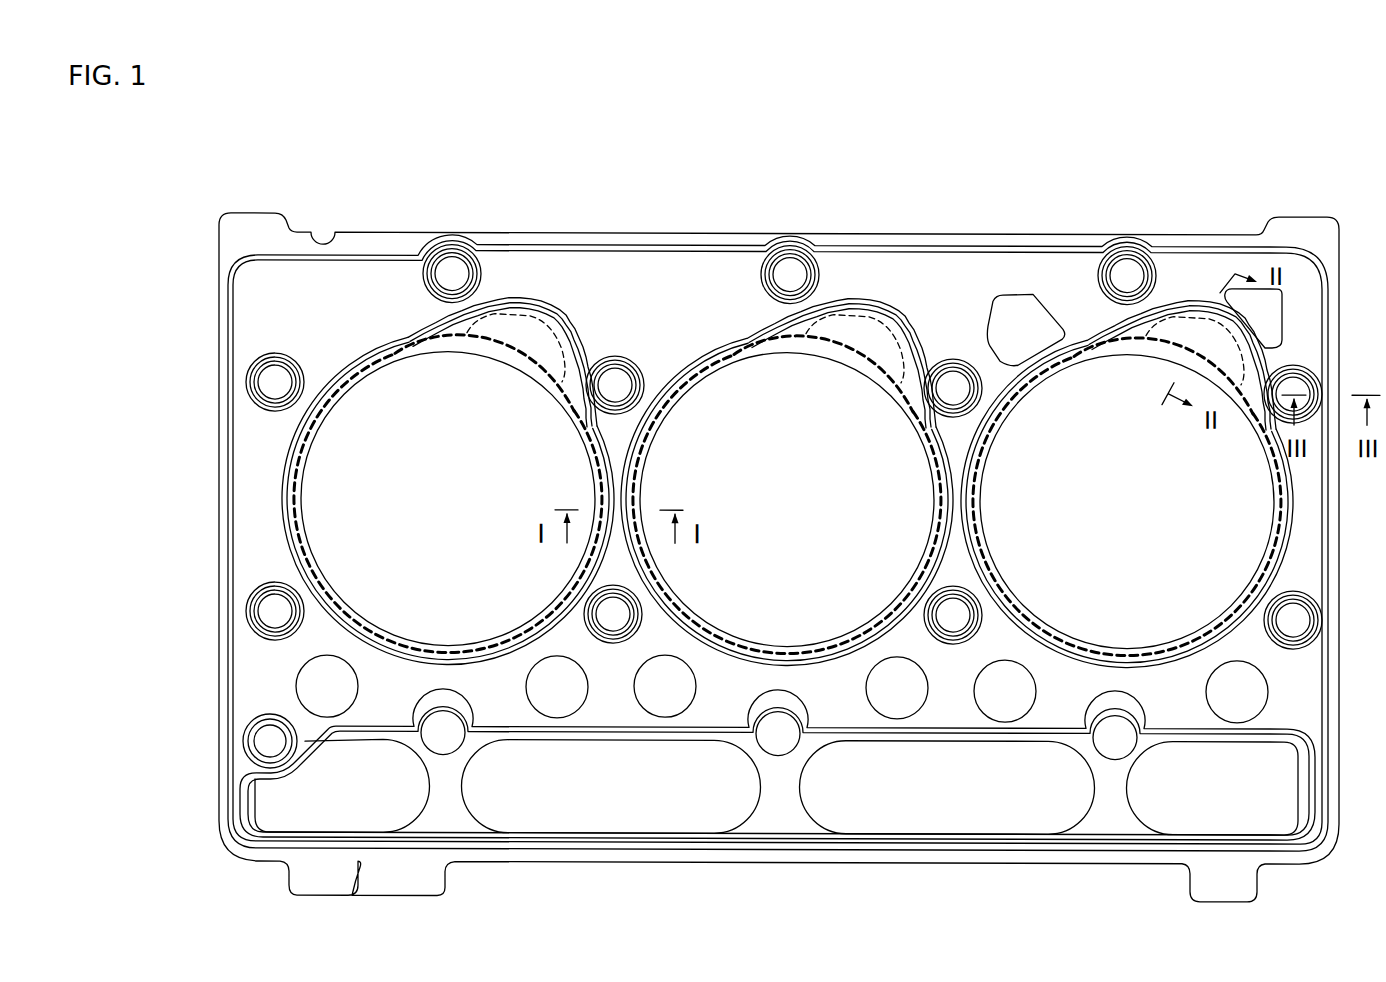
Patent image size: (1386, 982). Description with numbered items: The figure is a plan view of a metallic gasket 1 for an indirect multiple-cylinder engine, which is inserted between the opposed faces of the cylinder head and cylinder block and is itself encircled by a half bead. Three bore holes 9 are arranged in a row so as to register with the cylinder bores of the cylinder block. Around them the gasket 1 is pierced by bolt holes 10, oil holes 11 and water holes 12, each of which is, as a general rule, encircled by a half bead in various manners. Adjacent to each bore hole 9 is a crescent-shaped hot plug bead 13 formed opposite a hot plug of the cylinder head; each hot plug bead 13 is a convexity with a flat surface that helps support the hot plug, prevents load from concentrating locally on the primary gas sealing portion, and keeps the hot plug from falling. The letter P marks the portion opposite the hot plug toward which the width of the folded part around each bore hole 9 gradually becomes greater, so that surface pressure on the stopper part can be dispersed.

The metallic gasket 1 is at (1128, 220).
The bore holes 9 is at (1136, 535).
The bolt holes 10 is at (446, 262).
The oil holes 11 is at (613, 836).
The water holes 12 is at (1033, 296).
The hot plug beads 13 is at (552, 326).
The portion opposite to the hot plug P is at (527, 364).